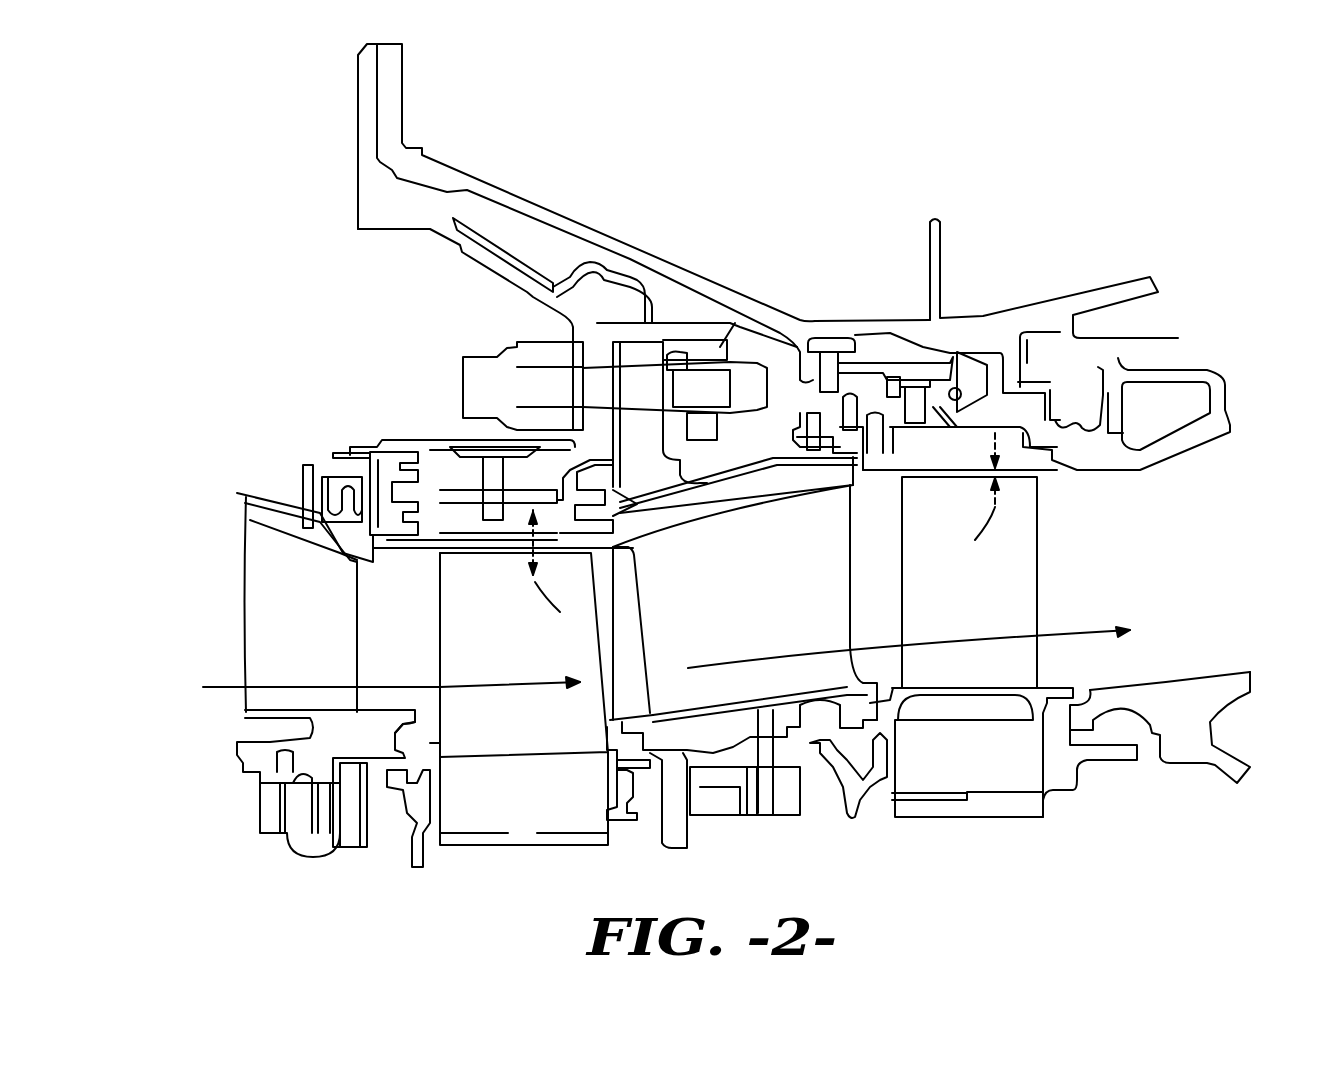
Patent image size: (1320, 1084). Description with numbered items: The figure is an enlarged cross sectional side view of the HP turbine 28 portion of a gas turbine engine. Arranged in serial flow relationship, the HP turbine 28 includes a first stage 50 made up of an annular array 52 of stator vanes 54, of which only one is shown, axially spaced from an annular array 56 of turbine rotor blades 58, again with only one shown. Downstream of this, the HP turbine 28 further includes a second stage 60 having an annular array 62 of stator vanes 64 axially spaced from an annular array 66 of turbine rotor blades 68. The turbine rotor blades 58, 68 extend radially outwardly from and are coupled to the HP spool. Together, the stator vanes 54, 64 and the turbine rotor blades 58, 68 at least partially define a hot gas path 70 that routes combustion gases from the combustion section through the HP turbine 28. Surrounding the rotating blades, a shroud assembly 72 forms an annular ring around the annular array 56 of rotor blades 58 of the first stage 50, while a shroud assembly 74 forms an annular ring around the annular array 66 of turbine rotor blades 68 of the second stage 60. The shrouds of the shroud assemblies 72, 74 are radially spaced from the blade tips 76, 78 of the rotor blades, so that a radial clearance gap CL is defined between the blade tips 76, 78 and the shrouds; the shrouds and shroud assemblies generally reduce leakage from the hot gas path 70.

The HP turbine 28 is at (882, 180).
The first stage 50 is at (400, 880).
The annular array 52 is at (247, 577).
The stator vane 54 is at (318, 629).
The annular array 56 is at (441, 650).
The turbine rotor blade 58 is at (534, 672).
The second stage 60 is at (770, 840).
The annular array 62 is at (628, 633).
The stator vane 64 is at (767, 599).
The annular array 66 is at (1048, 605).
The turbine rotor blade 68 is at (988, 619).
The hot gas path 70 is at (227, 686).
The shroud assembly 72 is at (393, 428).
The shroud assembly 74 is at (980, 395).
The blade tip 76 is at (472, 552).
The blade tip 78 is at (965, 483).